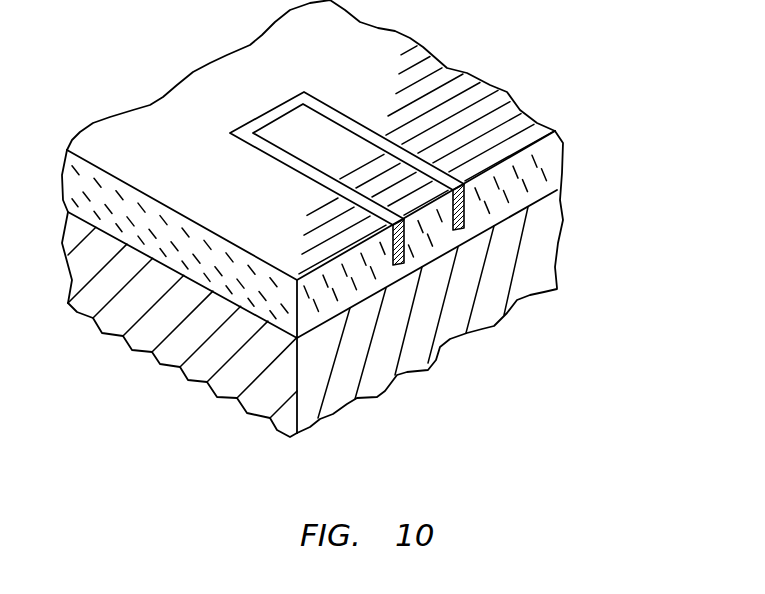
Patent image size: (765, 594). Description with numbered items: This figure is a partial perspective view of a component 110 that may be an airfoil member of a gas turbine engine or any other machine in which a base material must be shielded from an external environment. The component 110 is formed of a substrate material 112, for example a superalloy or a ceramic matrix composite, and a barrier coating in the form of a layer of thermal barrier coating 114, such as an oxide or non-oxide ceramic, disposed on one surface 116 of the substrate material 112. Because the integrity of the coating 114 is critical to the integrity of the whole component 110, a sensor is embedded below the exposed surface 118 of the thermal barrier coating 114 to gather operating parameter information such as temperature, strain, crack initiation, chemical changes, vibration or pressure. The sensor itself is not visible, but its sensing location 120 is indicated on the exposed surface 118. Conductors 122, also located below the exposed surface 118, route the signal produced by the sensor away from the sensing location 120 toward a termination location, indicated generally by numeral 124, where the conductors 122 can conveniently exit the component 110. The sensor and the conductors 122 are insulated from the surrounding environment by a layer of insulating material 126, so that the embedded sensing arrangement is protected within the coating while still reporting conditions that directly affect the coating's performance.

The component 110 is at (684, 66).
The substrate material 112 is at (560, 224).
The thermal barrier coating 114 is at (558, 142).
The surface 116 is at (532, 207).
The exposed surface 118 is at (488, 98).
The sensing location 120 is at (261, 108).
The conductors 122 is at (455, 229).
The recess bottom region 124 is at (441, 273).
The insulating material 126 is at (288, 152).